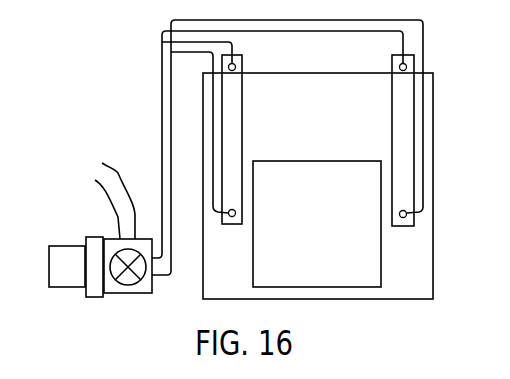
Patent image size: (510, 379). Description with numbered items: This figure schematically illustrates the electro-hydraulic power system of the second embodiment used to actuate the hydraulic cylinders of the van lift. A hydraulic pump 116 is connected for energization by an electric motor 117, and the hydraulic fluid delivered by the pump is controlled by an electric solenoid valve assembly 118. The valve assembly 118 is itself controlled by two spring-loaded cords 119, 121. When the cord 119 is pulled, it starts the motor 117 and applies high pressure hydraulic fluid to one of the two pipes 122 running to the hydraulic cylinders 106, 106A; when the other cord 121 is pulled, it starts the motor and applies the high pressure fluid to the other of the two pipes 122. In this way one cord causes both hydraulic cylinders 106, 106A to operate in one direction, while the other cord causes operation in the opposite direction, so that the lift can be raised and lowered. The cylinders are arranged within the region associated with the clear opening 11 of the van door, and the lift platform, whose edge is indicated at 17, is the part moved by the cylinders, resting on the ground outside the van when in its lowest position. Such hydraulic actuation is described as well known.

The clear opening 11 is at (428, 70).
The lift platform edge 17 is at (335, 203).
The hydraulic cylinder 106 is at (233, 108).
The hydraulic cylinder 106A is at (398, 108).
The hydraulic pump 116 is at (95, 290).
The electric motor 117 is at (65, 258).
The electric solenoid valve assembly 118 is at (128, 285).
The spring-loaded cord 119 is at (100, 188).
The spring-loaded cord 121 is at (106, 191).
The pipes 122 is at (150, 106).